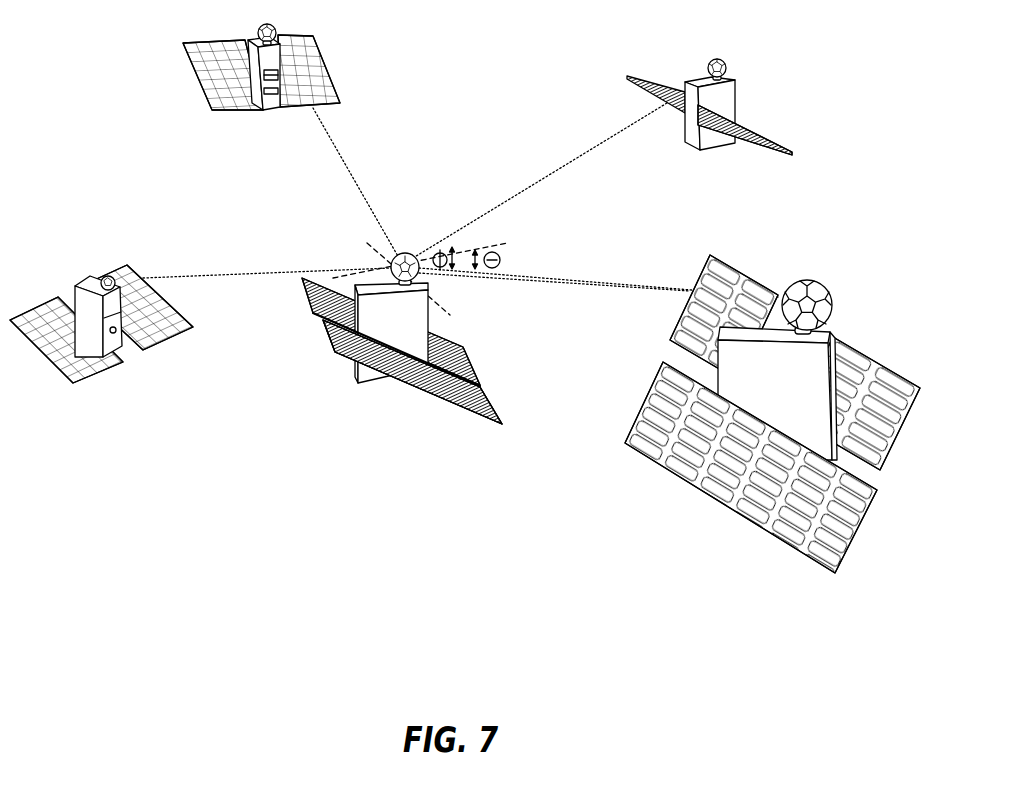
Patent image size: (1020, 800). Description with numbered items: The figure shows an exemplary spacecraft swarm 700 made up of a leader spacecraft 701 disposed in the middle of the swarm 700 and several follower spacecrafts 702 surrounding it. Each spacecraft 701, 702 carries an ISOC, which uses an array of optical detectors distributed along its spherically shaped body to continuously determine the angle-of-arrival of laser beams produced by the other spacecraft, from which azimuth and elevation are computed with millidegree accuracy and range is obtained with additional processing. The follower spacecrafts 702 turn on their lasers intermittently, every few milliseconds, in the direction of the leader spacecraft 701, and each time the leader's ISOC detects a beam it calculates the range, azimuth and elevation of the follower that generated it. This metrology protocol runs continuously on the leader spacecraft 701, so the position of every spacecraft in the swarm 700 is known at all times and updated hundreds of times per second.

The spacecraft swarm 700 is at (465, 298).
The leader spacecraft 701 is at (390, 323).
The follower spacecrafts 702 is at (192, 89).